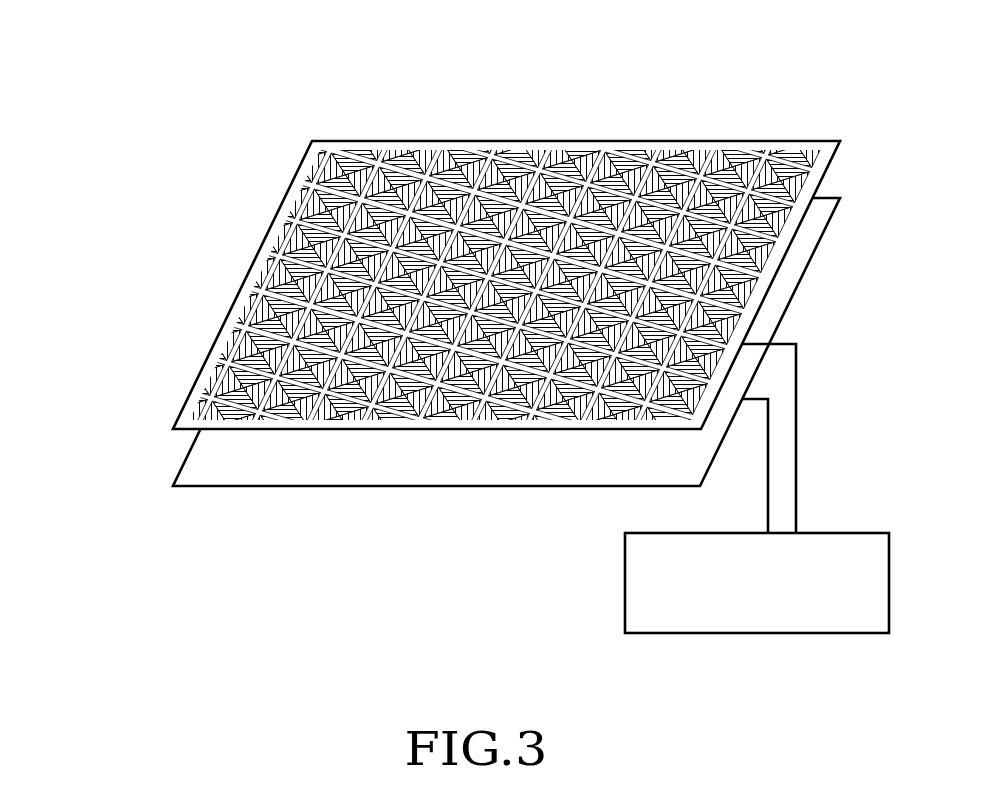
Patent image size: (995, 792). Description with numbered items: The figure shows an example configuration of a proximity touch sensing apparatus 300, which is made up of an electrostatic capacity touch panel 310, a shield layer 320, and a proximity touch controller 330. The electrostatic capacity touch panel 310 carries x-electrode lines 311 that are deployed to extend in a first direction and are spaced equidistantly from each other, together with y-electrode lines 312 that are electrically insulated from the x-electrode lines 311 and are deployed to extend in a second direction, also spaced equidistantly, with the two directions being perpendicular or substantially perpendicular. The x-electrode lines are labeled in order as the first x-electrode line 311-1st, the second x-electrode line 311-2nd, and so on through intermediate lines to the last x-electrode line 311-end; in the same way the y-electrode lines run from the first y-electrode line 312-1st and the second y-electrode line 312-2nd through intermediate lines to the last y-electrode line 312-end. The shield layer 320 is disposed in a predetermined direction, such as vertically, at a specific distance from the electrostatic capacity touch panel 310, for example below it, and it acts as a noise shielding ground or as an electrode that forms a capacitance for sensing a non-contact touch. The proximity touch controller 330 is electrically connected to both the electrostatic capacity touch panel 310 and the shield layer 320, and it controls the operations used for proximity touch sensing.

The proximity touch sensing apparatus 300 is at (228, 63).
The electrostatic capacity touch panel 310 is at (836, 168).
The x-electrode lines 311 is at (207, 121).
The first x-electrode line 311-1st is at (335, 183).
The second x-electrode line 311-2nd is at (317, 218).
The last x-electrode line 311-end is at (230, 395).
The y-electrode lines 312 is at (855, 90).
The first y-electrode line 312-1st is at (331, 156).
The second y-electrode line 312-2nd is at (371, 156).
The last y-electrode line 312-end is at (806, 156).
The shield layer 320 is at (825, 247).
The proximity touch controller 330 is at (822, 533).